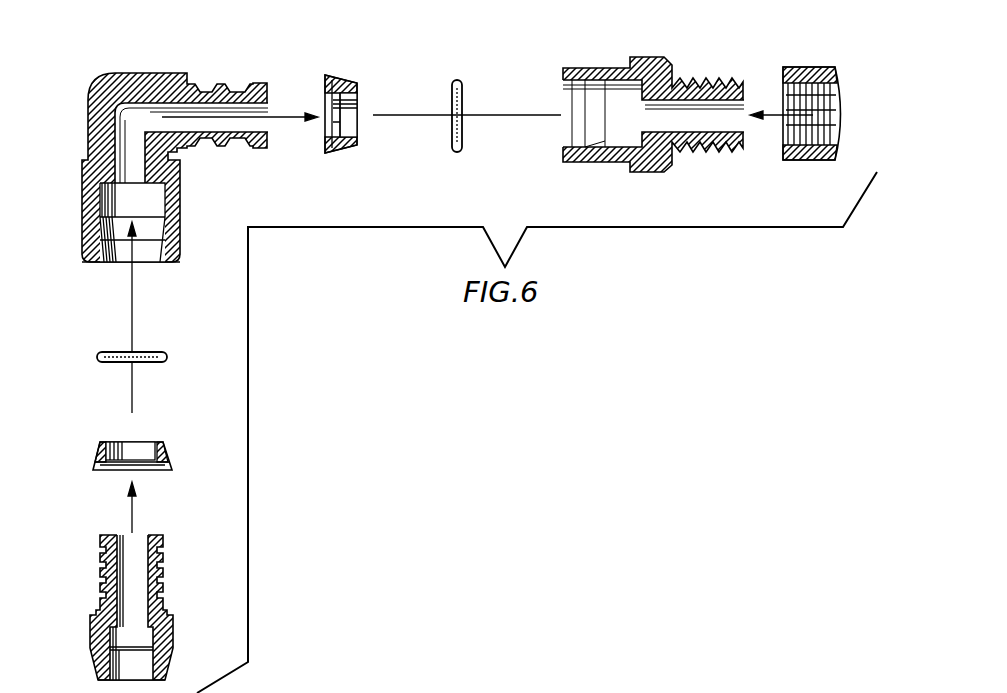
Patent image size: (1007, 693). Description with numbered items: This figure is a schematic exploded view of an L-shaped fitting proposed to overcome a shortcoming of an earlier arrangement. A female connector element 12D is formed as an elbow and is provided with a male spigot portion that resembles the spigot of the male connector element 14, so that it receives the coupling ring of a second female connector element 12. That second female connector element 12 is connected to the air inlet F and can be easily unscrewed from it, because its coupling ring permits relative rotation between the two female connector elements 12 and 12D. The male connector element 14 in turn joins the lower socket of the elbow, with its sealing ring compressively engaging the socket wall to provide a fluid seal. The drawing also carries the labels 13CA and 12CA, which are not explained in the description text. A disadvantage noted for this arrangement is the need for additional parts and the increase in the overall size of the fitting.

The female connector element 12D is at (118, 67).
The female connector element 12 is at (683, 70).
The air inlet F is at (848, 78).
The male connector element 14 is at (94, 575).
The coupling adapter 13CA is at (577, 682).
The coupling adapter 12CA is at (687, 692).